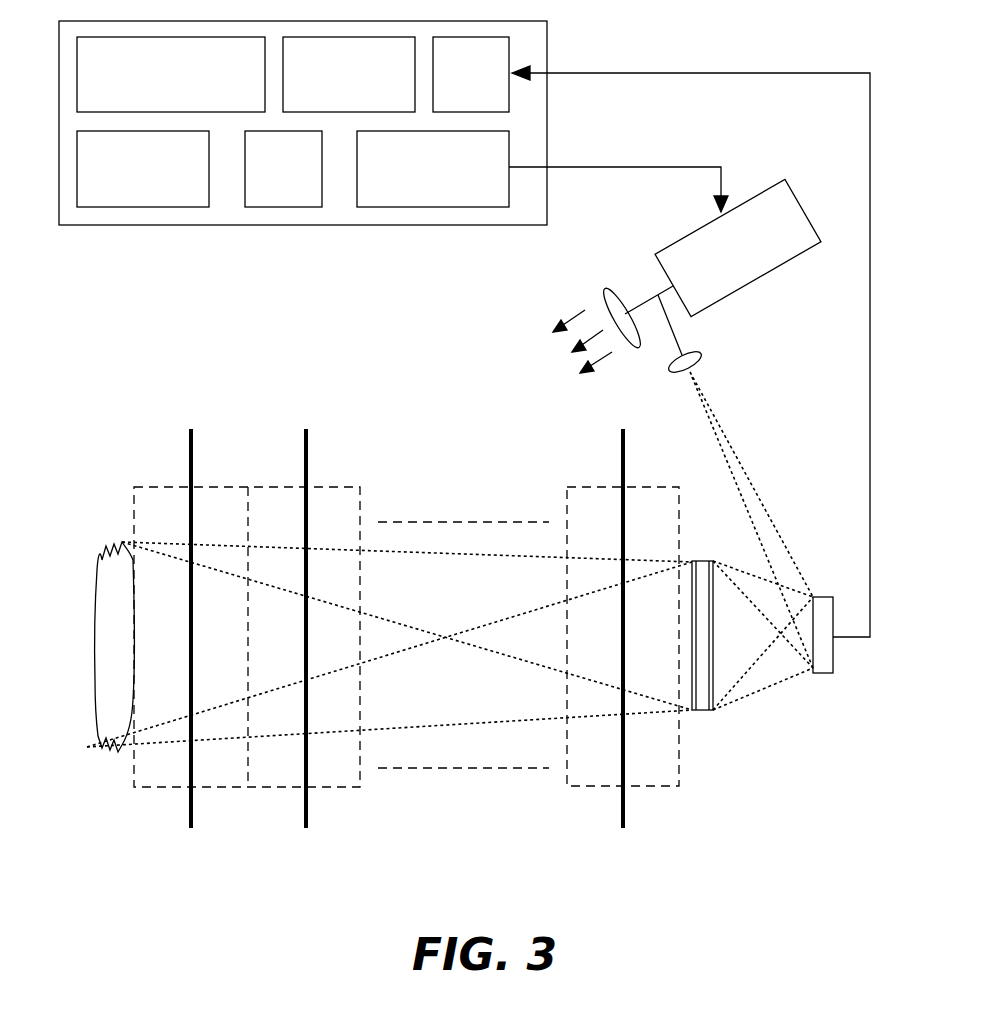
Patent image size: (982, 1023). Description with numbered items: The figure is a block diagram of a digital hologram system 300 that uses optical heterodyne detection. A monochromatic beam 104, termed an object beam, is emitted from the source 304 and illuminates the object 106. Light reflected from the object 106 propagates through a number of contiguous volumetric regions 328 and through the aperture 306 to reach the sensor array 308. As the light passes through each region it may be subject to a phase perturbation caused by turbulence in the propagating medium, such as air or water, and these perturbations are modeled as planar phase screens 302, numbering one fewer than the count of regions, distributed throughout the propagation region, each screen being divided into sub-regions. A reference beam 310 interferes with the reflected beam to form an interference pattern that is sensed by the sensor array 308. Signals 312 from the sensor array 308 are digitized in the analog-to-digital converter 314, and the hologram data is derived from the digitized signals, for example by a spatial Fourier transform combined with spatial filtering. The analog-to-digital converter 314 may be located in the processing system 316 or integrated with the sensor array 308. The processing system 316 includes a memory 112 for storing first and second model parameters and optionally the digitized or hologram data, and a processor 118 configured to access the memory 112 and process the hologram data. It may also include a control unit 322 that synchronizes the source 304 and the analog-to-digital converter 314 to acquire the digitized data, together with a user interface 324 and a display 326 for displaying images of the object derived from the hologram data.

The digital hologram system 300 is at (452, 459).
The processor 118 is at (150, 100).
The memory 112 is at (328, 100).
The analog-to-digital converter 314 is at (450, 100).
The display 326 is at (122, 194).
The user interface 324 is at (262, 194).
The control unit 322 is at (412, 194).
The processing system 316 is at (303, 151).
The source 304 is at (655, 255).
The monochromatic beam 104 is at (583, 312).
The signals 312 is at (870, 355).
The reference beam 310 is at (753, 483).
The object 106 is at (102, 558).
The planar phase screens 302 is at (191, 468).
The contiguous volumetric regions 328 is at (159, 787).
The aperture 306 is at (713, 710).
The sensor array 308 is at (822, 673).